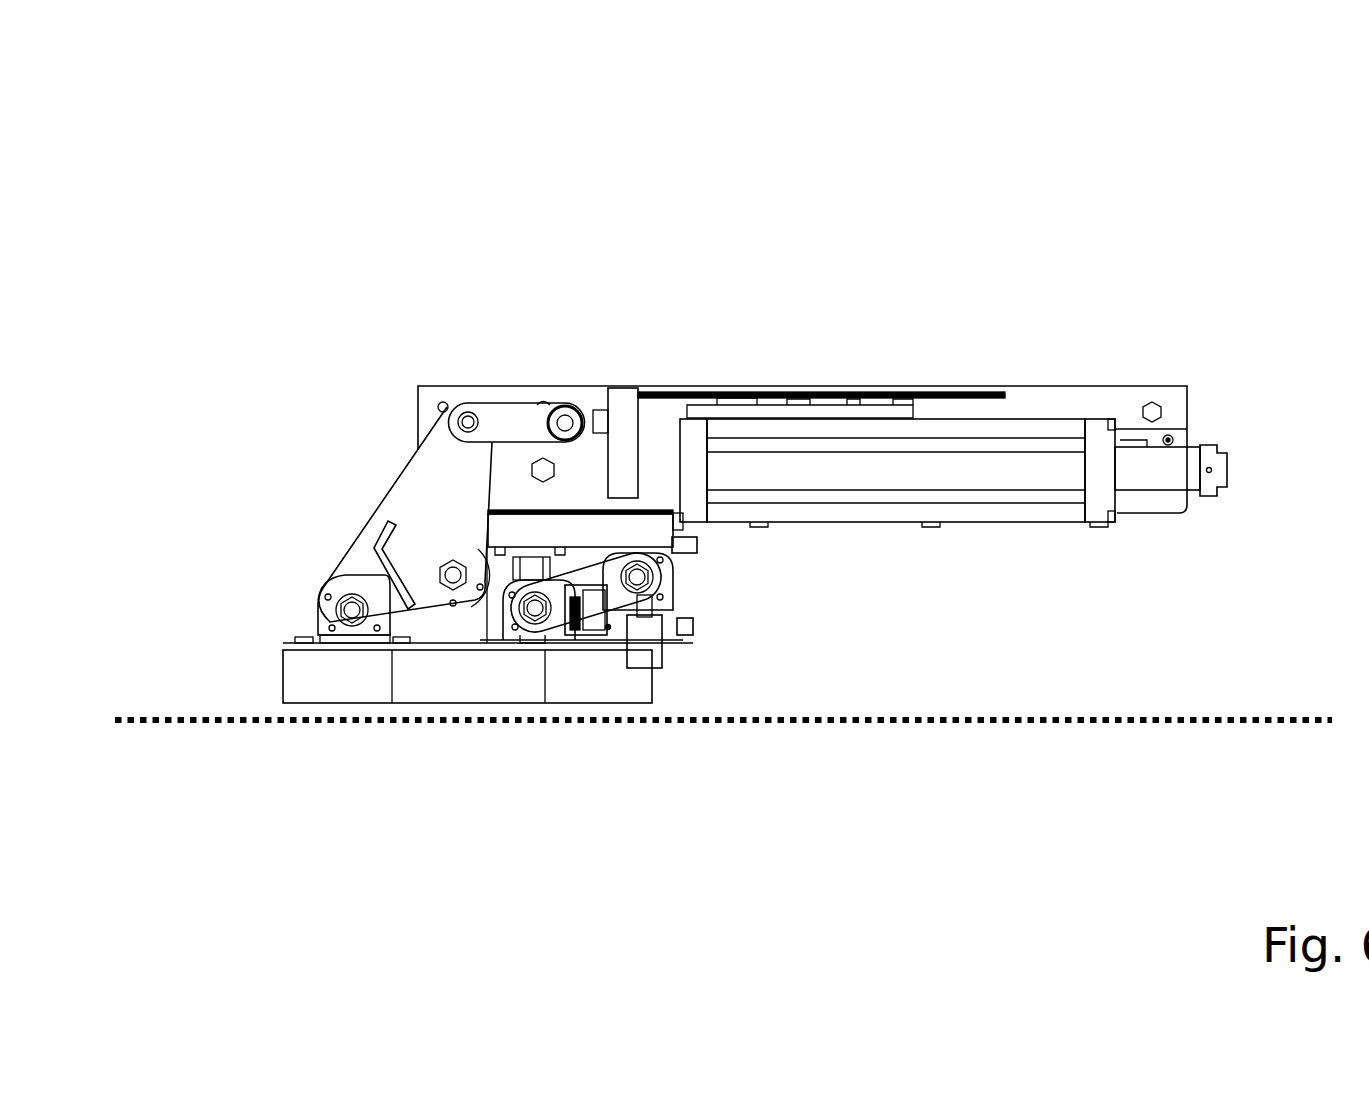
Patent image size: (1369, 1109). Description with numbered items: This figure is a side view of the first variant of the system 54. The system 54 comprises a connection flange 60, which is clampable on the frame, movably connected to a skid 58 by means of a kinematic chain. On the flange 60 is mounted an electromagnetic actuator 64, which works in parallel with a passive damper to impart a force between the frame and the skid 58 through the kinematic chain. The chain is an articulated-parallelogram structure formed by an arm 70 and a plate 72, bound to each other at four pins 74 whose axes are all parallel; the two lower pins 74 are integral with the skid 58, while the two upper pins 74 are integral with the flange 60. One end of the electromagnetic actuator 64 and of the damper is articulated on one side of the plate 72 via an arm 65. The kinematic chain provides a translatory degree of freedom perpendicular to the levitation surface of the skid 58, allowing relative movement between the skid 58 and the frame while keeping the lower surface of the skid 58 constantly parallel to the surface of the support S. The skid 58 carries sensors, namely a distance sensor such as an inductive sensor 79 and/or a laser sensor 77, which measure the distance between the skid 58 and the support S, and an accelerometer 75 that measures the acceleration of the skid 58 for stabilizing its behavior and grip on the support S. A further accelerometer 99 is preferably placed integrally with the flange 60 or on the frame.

The system 54 is at (953, 223).
The skid 58 is at (330, 683).
The connection flange 60 is at (1062, 402).
The electromagnetic actuator 64 is at (965, 462).
The arm 65 is at (517, 423).
The arm 70 is at (600, 577).
The plate 72 is at (447, 520).
The pins 74 is at (463, 418).
The accelerometer 75 is at (693, 630).
The laser sensor 77 is at (600, 613).
The inductive sensor 79 is at (650, 628).
The accelerometer 99 is at (693, 550).
The support S is at (1190, 705).